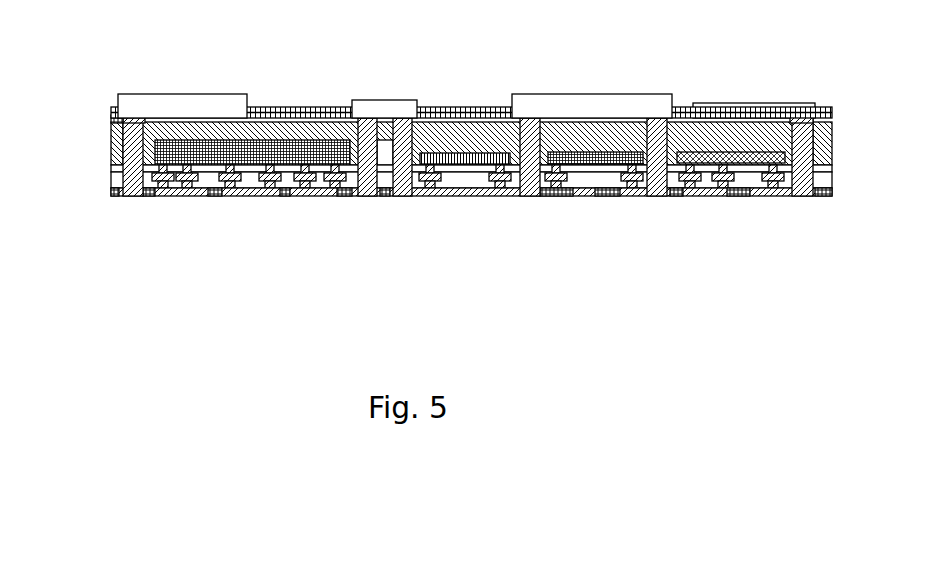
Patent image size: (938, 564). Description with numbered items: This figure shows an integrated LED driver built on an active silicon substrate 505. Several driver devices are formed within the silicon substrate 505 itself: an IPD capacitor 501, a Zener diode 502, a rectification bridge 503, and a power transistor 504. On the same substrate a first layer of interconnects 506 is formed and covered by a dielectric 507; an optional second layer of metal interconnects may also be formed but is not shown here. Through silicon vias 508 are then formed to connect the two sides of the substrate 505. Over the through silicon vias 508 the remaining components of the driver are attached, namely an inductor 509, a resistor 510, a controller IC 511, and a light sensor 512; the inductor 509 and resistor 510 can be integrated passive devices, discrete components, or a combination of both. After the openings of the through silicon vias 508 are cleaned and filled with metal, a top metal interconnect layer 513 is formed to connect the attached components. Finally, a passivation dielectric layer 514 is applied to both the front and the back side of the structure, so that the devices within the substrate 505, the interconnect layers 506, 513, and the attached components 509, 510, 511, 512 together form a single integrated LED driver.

The IPD capacitor 501 is at (213, 152).
The Zener diode 502 is at (495, 160).
The rectification bridge 503 is at (605, 160).
The power transistor 504 is at (765, 162).
The silicon substrate 505 is at (113, 152).
The first layer of interconnects 506 is at (343, 172).
The dielectric 507 is at (117, 180).
The through silicon via 508 is at (368, 178).
The inductor 509 is at (193, 110).
The resistor 510 is at (385, 108).
The controller IC 511 is at (618, 110).
The light sensor 512 is at (785, 110).
The top metal interconnect layer 513 is at (652, 185).
The passivation dielectric layer 514 is at (490, 108).